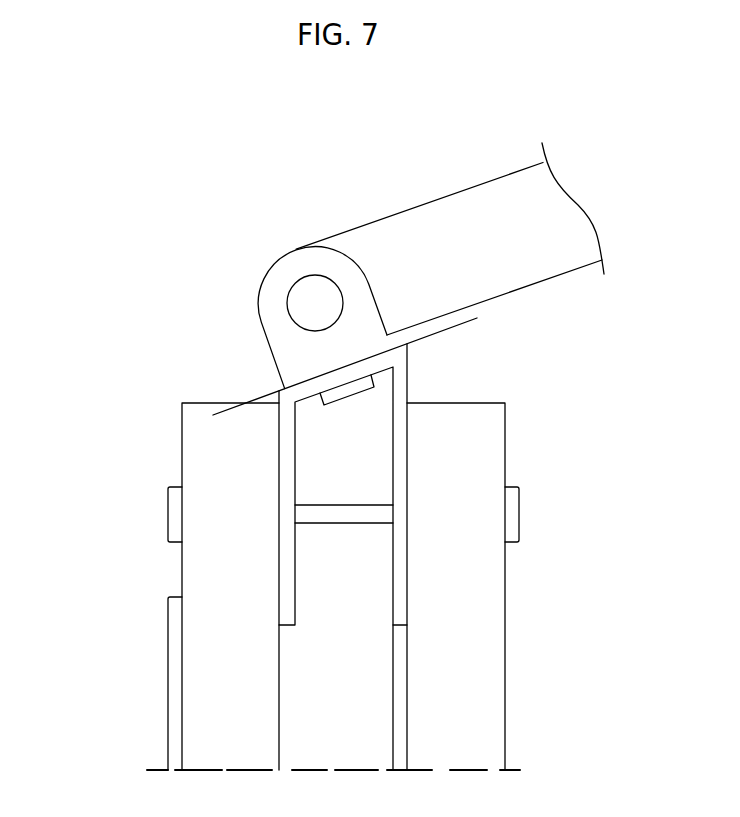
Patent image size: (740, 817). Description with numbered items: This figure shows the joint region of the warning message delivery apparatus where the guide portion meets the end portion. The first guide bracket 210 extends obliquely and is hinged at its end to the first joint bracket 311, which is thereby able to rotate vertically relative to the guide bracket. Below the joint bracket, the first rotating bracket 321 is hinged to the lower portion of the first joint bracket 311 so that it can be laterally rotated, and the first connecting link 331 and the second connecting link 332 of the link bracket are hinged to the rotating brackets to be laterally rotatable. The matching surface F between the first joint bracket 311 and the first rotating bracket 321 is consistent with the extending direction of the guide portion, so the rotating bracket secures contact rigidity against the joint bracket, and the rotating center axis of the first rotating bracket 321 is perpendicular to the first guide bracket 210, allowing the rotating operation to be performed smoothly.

The first guide bracket 210 is at (465, 205).
The first joint bracket 311 is at (285, 270).
The first rotating bracket 321 is at (355, 372).
The first connecting link 331 is at (205, 677).
The second connecting link 332 is at (483, 672).
The matching surface F is at (460, 326).